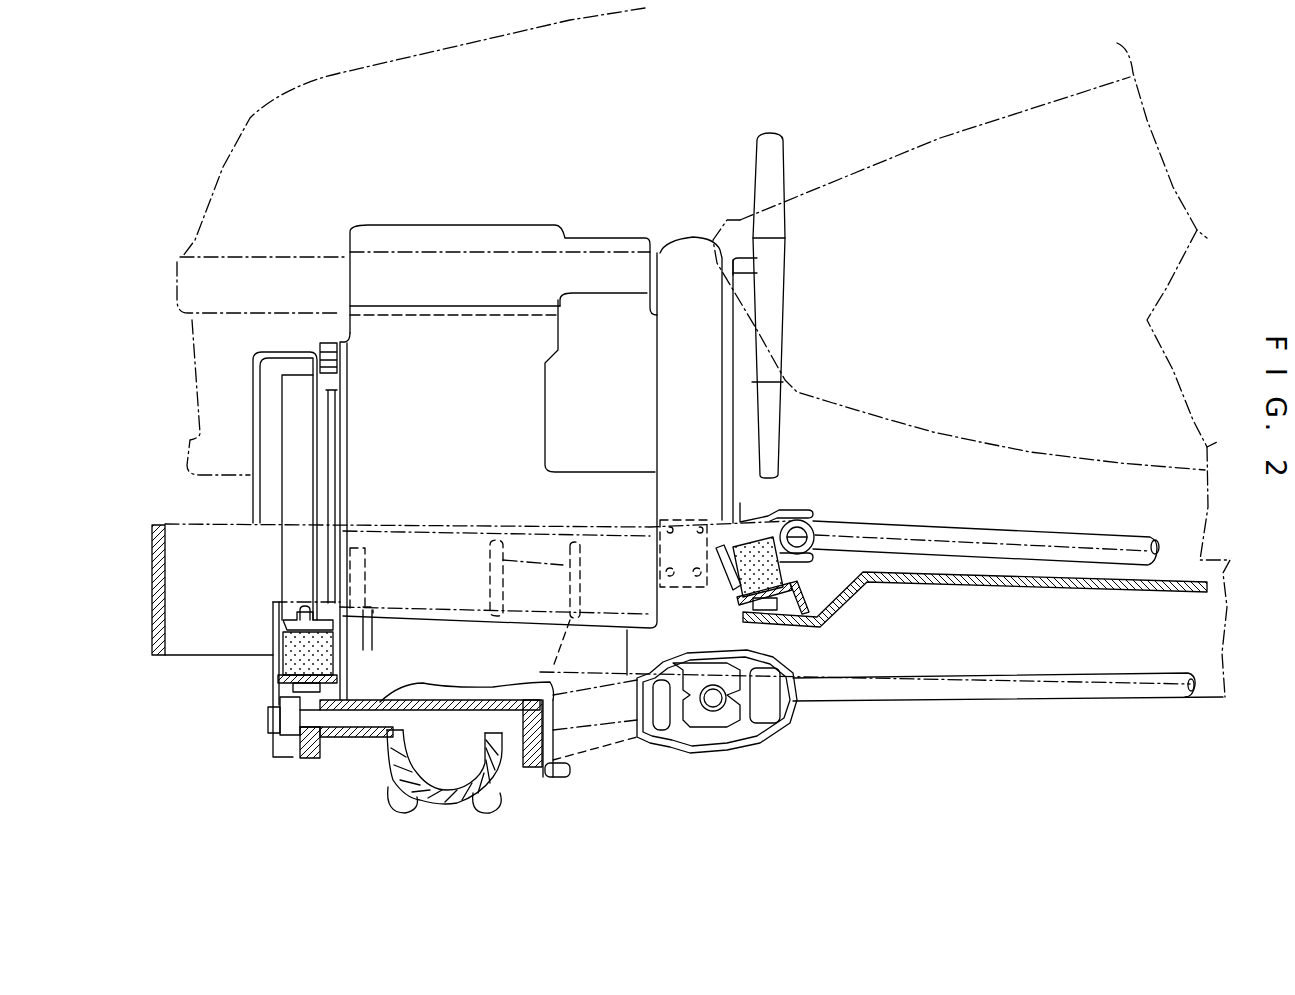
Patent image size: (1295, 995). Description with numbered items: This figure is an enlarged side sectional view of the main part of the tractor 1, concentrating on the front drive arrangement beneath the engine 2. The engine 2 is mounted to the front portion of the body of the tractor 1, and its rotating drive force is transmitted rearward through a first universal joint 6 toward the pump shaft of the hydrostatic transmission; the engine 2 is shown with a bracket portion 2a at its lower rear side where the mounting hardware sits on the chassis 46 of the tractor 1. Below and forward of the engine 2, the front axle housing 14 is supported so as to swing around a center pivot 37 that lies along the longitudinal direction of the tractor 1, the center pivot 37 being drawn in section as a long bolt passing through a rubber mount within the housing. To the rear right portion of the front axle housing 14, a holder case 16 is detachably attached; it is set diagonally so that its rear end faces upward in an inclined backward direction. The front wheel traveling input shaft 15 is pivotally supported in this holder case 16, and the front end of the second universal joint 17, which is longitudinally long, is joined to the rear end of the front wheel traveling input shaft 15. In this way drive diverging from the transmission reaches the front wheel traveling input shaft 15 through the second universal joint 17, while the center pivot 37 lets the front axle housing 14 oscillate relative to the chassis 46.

The tractor 1 is at (267, 132).
The engine 2 is at (417, 224).
The engine bracket 2a is at (747, 503).
The first universal joint 6 is at (1042, 530).
The front axle housing 14 is at (510, 777).
The front wheel traveling input shaft 15 is at (593, 723).
The holder case 16 is at (640, 747).
The second universal joint 17 is at (964, 700).
The center pivot 37 is at (387, 720).
The chassis 46 is at (185, 652).